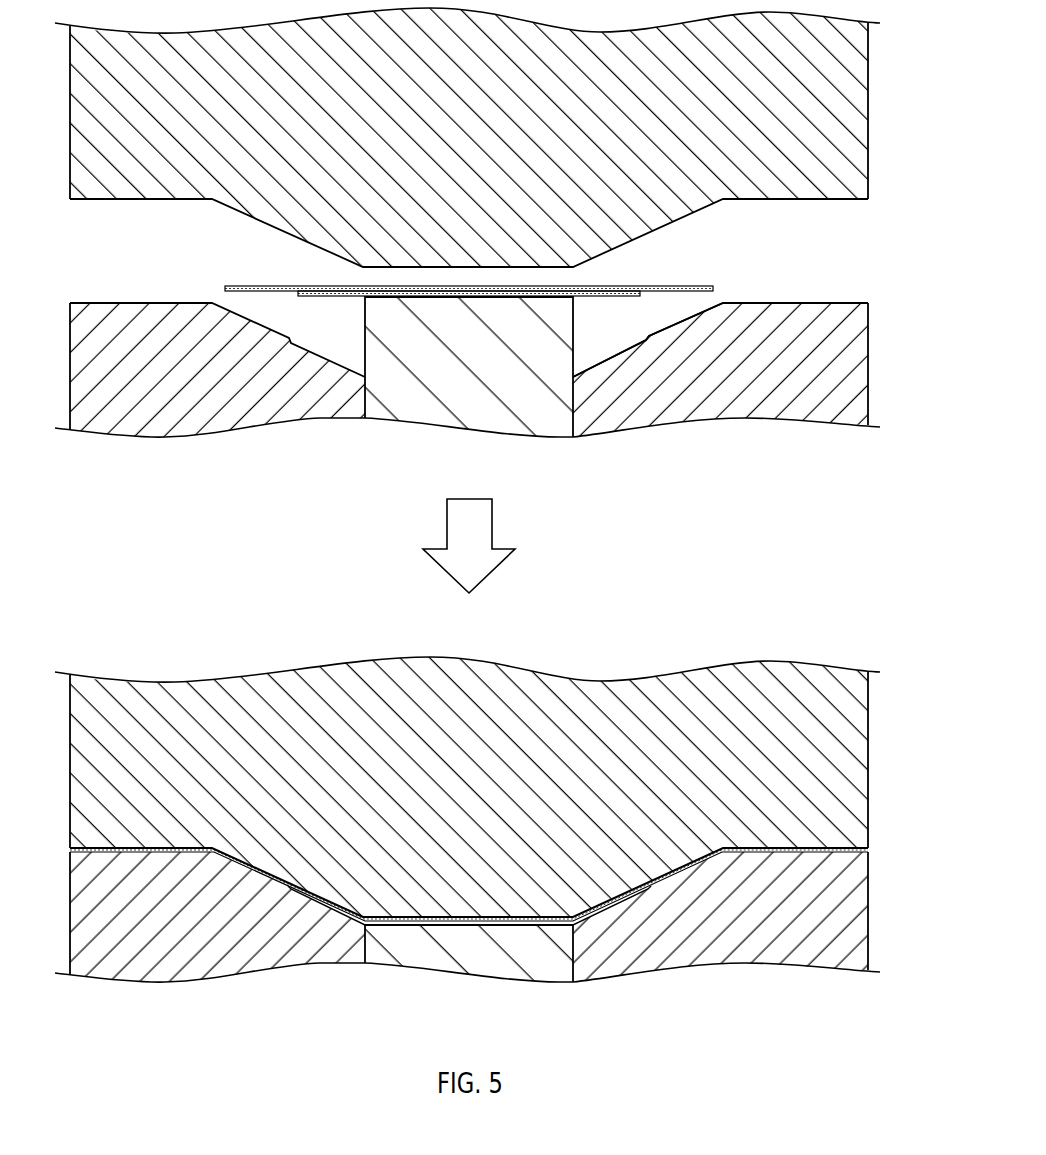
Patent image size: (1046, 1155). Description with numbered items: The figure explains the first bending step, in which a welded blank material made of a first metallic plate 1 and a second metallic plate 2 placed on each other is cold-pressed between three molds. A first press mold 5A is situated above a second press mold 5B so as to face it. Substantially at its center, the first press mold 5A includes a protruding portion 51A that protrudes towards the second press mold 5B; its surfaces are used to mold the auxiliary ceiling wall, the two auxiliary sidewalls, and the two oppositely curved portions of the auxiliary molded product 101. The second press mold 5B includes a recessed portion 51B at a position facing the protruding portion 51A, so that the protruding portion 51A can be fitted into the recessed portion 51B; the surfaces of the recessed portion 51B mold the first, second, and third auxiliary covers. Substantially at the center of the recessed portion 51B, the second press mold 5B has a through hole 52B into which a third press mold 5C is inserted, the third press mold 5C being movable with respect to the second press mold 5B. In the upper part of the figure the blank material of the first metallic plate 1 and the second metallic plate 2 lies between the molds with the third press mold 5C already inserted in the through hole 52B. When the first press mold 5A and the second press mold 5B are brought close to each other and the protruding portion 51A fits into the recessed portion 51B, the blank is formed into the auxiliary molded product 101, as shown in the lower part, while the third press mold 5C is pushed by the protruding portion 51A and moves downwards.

The first press mold 5A is at (868, 97).
The second press mold 5B is at (868, 340).
The third press mold 5C is at (573, 420).
The protruding portion 51A is at (684, 217).
The recessed portion 51B is at (692, 318).
The through hole 52B is at (578, 377).
The first metallic plate 1 is at (272, 282).
The second metallic plate 2 is at (343, 300).
The auxiliary molded product 101 is at (646, 902).